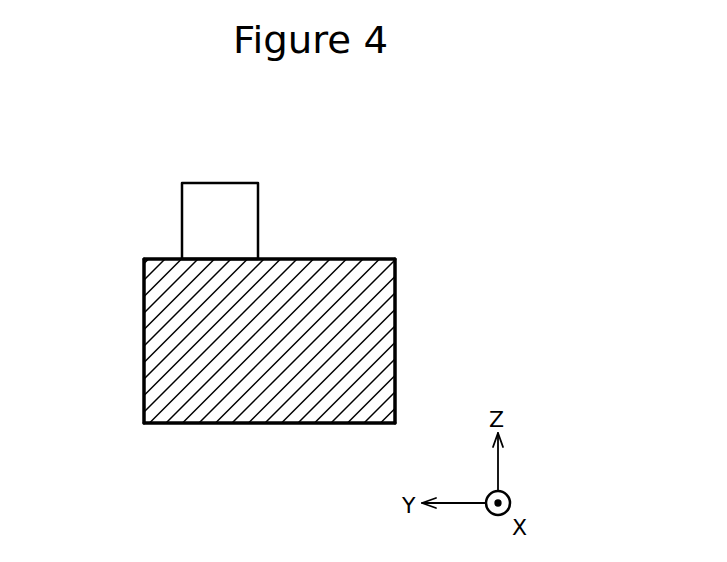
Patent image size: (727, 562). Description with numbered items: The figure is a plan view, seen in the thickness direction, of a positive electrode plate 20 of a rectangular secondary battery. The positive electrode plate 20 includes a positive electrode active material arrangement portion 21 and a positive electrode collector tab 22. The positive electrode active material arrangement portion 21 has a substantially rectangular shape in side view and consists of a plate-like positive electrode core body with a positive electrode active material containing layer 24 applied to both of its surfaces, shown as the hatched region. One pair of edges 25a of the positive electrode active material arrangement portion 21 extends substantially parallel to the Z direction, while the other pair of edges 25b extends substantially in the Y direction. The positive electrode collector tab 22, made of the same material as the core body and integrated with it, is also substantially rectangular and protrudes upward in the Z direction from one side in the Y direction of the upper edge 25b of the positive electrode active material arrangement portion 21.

The positive electrode plate 20 is at (270, 309).
The positive electrode active material arrangement portion 21 is at (270, 345).
The positive electrode collector tab 22 is at (220, 193).
The positive electrode active material containing layer 24 is at (218, 403).
The edges 25a is at (143, 313).
The edges 25b is at (357, 260).